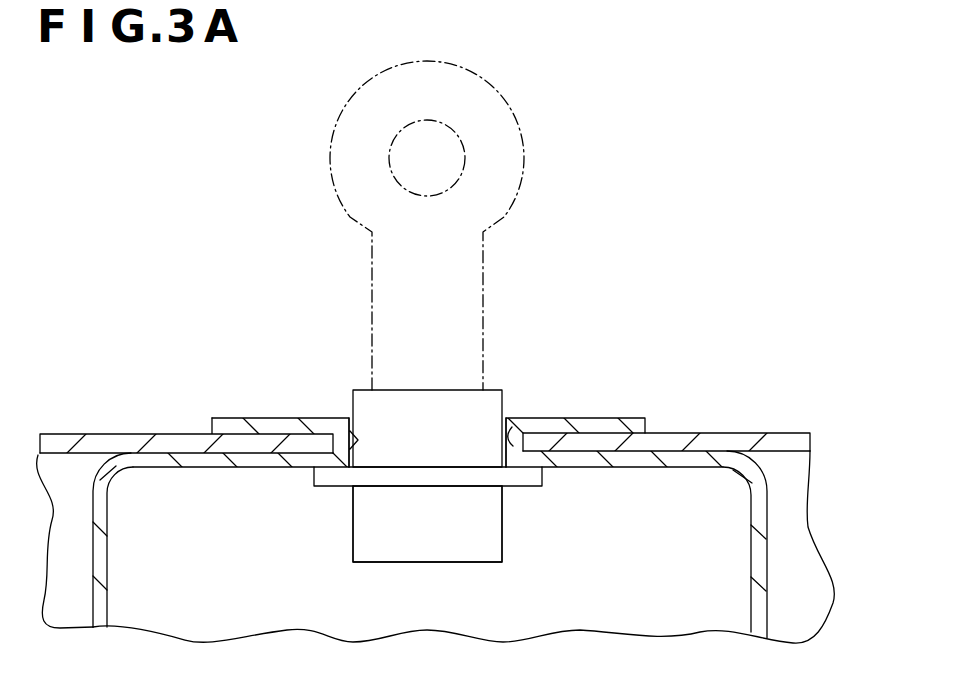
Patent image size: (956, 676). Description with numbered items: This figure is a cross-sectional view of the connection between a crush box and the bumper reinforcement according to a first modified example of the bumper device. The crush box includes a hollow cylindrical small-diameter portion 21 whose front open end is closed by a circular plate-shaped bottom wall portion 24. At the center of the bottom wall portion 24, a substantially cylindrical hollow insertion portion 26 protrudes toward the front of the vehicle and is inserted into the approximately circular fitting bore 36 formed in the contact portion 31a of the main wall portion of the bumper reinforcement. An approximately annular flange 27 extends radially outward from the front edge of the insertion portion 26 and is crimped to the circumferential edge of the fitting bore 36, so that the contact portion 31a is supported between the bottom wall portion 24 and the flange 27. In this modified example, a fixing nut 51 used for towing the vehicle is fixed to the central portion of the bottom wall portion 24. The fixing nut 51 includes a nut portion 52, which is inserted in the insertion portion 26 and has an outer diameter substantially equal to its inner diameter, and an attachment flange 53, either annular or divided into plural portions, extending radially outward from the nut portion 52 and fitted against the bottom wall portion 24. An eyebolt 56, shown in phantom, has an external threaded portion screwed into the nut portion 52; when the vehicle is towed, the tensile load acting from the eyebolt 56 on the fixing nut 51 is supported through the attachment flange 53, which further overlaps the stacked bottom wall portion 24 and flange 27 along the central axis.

The small-diameter portion 21 is at (768, 610).
The bottom wall portion 24 is at (165, 458).
The insertion portion 26 is at (345, 425).
The flange 27 is at (236, 417).
The contact portion 31a is at (688, 430).
The fitting bore 36 is at (515, 426).
The fixing nut 51 is at (560, 551).
The nut portion 52 is at (378, 563).
The attachment flange 53 is at (330, 488).
The eyebolt 56 is at (485, 281).